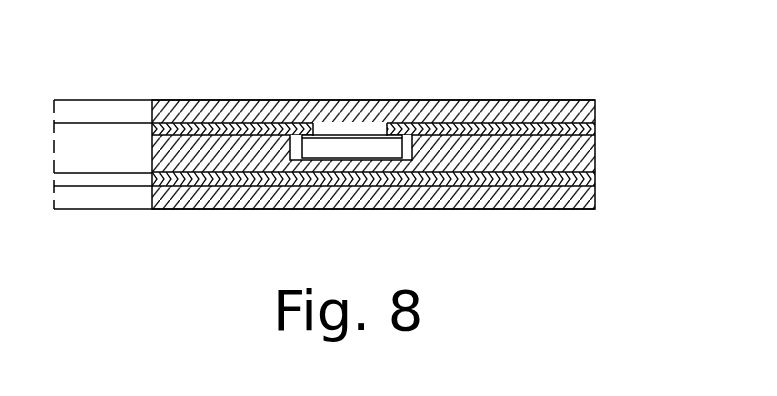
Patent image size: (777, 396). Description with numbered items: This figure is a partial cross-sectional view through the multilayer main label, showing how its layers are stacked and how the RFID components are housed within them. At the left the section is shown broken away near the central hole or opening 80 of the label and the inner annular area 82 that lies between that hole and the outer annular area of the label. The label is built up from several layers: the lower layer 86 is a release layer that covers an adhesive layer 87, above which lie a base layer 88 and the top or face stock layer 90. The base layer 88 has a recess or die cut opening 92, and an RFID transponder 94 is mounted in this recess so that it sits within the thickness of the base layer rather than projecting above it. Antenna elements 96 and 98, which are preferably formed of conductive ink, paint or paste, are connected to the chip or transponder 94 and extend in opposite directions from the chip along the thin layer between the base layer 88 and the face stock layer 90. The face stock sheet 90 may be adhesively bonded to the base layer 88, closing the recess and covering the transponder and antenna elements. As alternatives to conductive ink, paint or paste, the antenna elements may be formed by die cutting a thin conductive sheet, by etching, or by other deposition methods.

The central hole 80 is at (118, 68).
The inner annular area 82 is at (406, 75).
The lower layer 86 is at (237, 196).
The adhesive layer 87 is at (592, 176).
The base layer 88 is at (575, 148).
The face stock layer 90 is at (595, 103).
The die cut opening 92 is at (407, 147).
The RFID transponder 94 is at (325, 145).
The antenna element 96 is at (226, 125).
The antenna element 98 is at (475, 124).